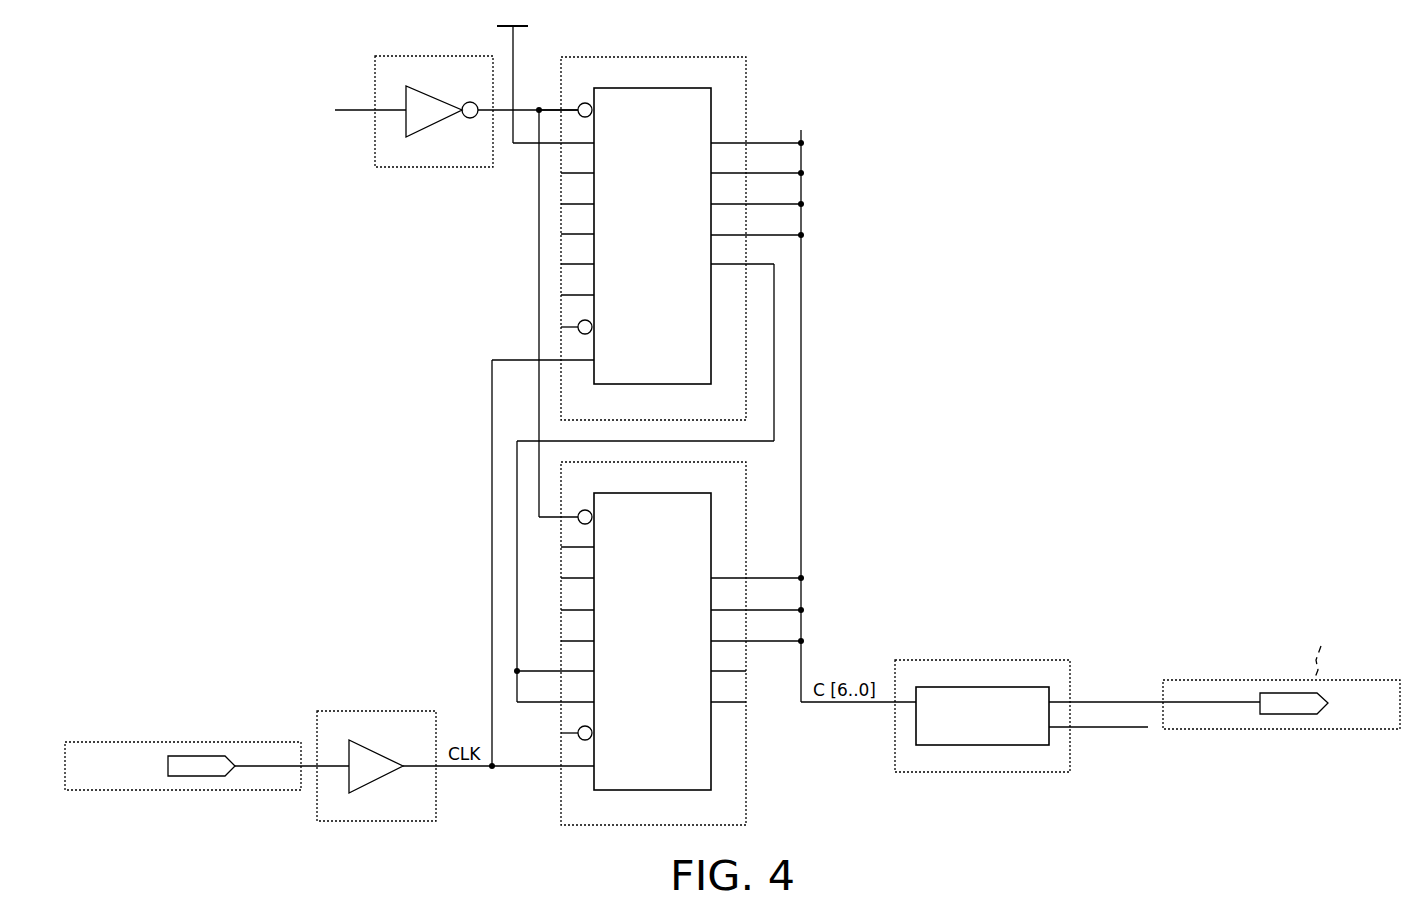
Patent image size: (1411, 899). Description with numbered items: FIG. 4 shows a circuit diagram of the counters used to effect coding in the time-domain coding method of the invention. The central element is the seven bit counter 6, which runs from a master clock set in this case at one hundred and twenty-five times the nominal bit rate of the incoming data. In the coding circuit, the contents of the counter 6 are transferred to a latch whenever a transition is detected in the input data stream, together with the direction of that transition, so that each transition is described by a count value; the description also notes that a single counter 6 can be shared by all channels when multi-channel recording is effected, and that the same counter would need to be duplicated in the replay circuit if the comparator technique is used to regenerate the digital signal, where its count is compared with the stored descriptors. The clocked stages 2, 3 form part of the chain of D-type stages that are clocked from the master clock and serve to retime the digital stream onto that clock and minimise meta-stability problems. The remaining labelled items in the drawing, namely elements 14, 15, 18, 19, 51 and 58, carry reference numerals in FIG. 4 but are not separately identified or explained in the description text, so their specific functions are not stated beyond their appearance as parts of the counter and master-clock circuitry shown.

The D-type flip-flop 2 is at (646, 251).
The D-type flip-flop 3 is at (659, 643).
The seven bit counter 6 is at (646, 227).
The sbdec decoder 14 is at (1077, 709).
The NOT gate (inverter) 15 is at (456, 111).
The global clock buffer 18 is at (376, 766).
The master clock input 19 is at (207, 785).
The TC output 51 is at (1281, 676).
The VCC supply 58 is at (540, 74).